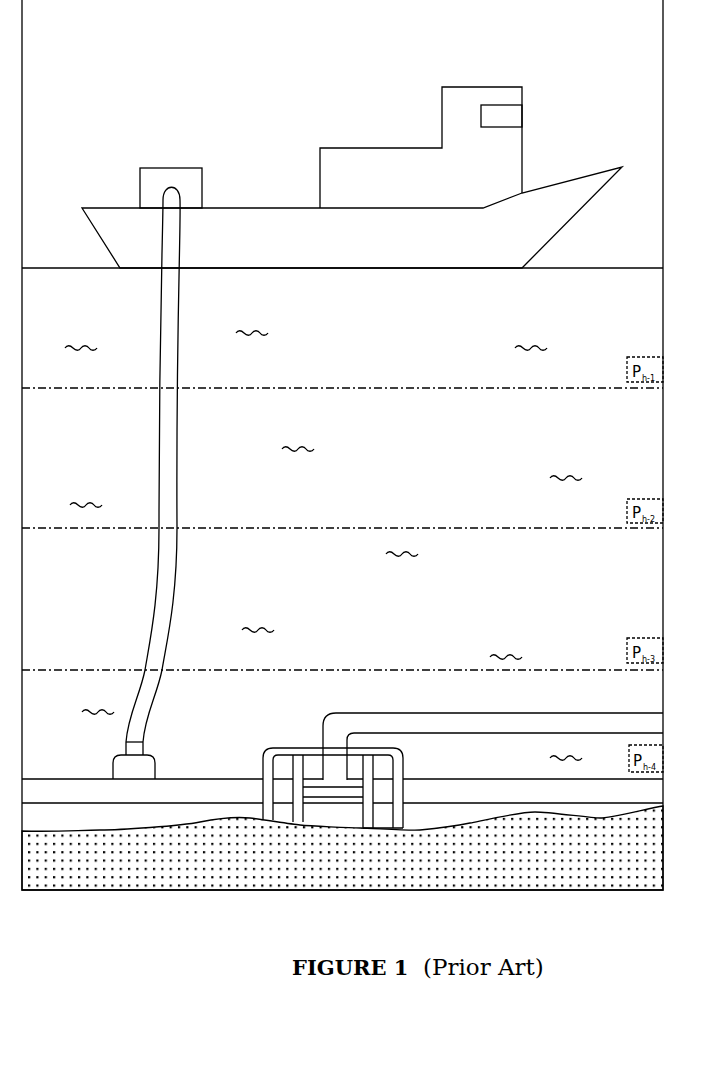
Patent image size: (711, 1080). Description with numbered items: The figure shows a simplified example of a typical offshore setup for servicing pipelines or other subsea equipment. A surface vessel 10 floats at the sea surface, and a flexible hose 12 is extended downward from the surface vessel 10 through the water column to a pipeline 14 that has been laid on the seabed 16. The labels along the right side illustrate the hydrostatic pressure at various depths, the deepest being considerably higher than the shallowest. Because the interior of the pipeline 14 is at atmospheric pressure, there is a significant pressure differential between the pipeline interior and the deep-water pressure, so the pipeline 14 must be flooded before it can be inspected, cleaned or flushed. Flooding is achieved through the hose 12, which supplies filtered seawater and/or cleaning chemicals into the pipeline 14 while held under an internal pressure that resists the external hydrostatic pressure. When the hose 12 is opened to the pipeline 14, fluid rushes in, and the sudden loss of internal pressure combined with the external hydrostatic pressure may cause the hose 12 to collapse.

The surface vessel 10 is at (355, 180).
The hose 12 is at (175, 487).
The pipeline 14 is at (213, 787).
The seabed 16 is at (77, 840).